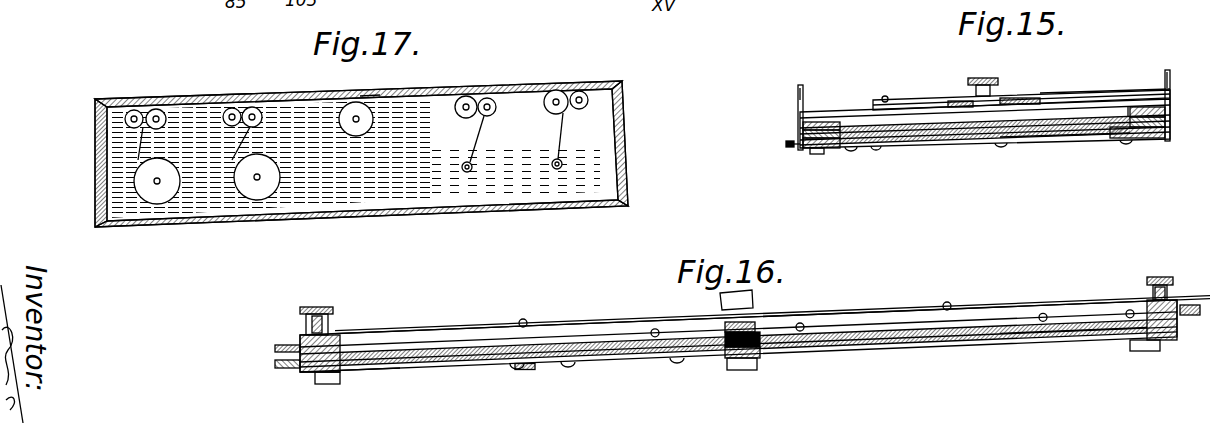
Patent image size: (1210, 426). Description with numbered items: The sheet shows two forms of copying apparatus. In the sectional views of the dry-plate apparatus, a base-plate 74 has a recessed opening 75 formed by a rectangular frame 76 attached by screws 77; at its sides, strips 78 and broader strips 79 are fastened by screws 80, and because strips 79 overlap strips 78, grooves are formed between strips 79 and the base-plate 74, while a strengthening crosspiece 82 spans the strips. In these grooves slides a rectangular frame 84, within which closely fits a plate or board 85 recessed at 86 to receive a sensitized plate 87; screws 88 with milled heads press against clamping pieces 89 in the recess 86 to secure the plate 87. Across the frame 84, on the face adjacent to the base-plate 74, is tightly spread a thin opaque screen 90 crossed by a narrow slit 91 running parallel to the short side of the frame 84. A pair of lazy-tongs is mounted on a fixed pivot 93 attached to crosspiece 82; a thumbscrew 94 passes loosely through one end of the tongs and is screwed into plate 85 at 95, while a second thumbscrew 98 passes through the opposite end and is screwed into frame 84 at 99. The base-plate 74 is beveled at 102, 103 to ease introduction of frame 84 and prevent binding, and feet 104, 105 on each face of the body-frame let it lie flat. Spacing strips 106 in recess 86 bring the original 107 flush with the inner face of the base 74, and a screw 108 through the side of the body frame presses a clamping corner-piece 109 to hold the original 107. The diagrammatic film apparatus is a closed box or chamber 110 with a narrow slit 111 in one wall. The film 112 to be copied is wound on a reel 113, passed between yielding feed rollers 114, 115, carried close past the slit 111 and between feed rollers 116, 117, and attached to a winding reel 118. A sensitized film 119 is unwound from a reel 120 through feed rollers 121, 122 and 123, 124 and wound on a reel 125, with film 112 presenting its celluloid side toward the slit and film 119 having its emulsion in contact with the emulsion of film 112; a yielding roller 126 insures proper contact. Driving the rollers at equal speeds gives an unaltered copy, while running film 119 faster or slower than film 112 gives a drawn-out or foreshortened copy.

In FIG. 15, the base-plate 74 is at (1128, 141).
In FIG. 16, the base-plate 74 is at (1048, 340).
In FIG. 15, the recessed opening 75 is at (948, 145).
In FIG. 16, the recessed opening 75 is at (634, 360).
In FIG. 15, the rectangular frame 76 is at (876, 149).
In FIG. 16, the rectangular frame 76 is at (530, 370).
In FIG. 15, the screws 77 is at (851, 151).
In FIG. 16, the screws 77 is at (512, 368).
In FIG. 15, the strips 78 is at (802, 134).
In FIG. 15, the broader strips 79 is at (802, 126).
In FIG. 15, the screws 80 is at (797, 108).
In FIG. 15, the crosspiece 82 is at (1115, 108).
In FIG. 15, the rectangular frame 84 is at (803, 146).
In FIG. 15, the plate or board 85 is at (1128, 117).
In FIG. 16, the plate or board 85 is at (312, 376).
In FIG. 16, the recess 86 is at (358, 371).
In FIG. 15, the sensitized plate 87 is at (1045, 138).
In FIG. 16, the sensitized plate 87 is at (440, 368).
In FIG. 16, the screws 88 is at (762, 355).
In FIG. 16, the clamping pieces 89 is at (722, 333).
In FIG. 16, the screen 90 is at (275, 364).
In FIG. 16, the slit 91 is at (762, 327).
In FIG. 15, the fixed pivot 93 is at (984, 78).
In FIG. 16, the thumbscrew 94 is at (318, 308).
In FIG. 16, the screw seat in plate 95 is at (275, 348).
In FIG. 16, the second thumbscrew 98 is at (1160, 277).
In FIG. 16, the screw seat in frame 99 is at (1182, 316).
In FIG. 16, the bevel 102 is at (1172, 341).
In FIG. 16, the bevel 103 is at (298, 371).
In FIG. 15, the feet 104 is at (817, 154).
In FIG. 16, the feet 104 is at (330, 384).
In FIG. 15, the feet 105 is at (806, 100).
In FIG. 16, the feet 105 is at (335, 326).
In FIG. 16, the spacing strips 106 is at (712, 360).
In FIG. 15, the original 107 is at (1003, 146).
In FIG. 16, the original 107 is at (584, 345).
In FIG. 15, the screw 108 is at (786, 144).
In FIG. 15, the clamping corner-piece 109 is at (862, 135).
In FIG. 17, the closed box or chamber 110 is at (605, 128).
In FIG. 17, the slit 111 is at (362, 97).
In FIG. 17, the film 112 is at (108, 135).
In FIG. 17, the reel 113 is at (150, 195).
In FIG. 17, the feed roller 114 is at (128, 112).
In FIG. 17, the feed roller 115 is at (158, 110).
In FIG. 17, the feed roller 116 is at (557, 90).
In FIG. 17, the feed roller 117 is at (585, 92).
In FIG. 17, the winding reel 118 is at (559, 169).
In FIG. 17, the sensitized film 119 is at (232, 160).
In FIG. 17, the reel 120 is at (258, 195).
In FIG. 17, the feed roller 121 is at (232, 108).
In FIG. 17, the feed roller 122 is at (255, 108).
In FIG. 17, the feed roller 123 is at (462, 97).
In FIG. 17, the feed roller 124 is at (490, 98).
In FIG. 17, the reel 125 is at (469, 172).
In FIG. 17, the yielding roller 126 is at (362, 130).